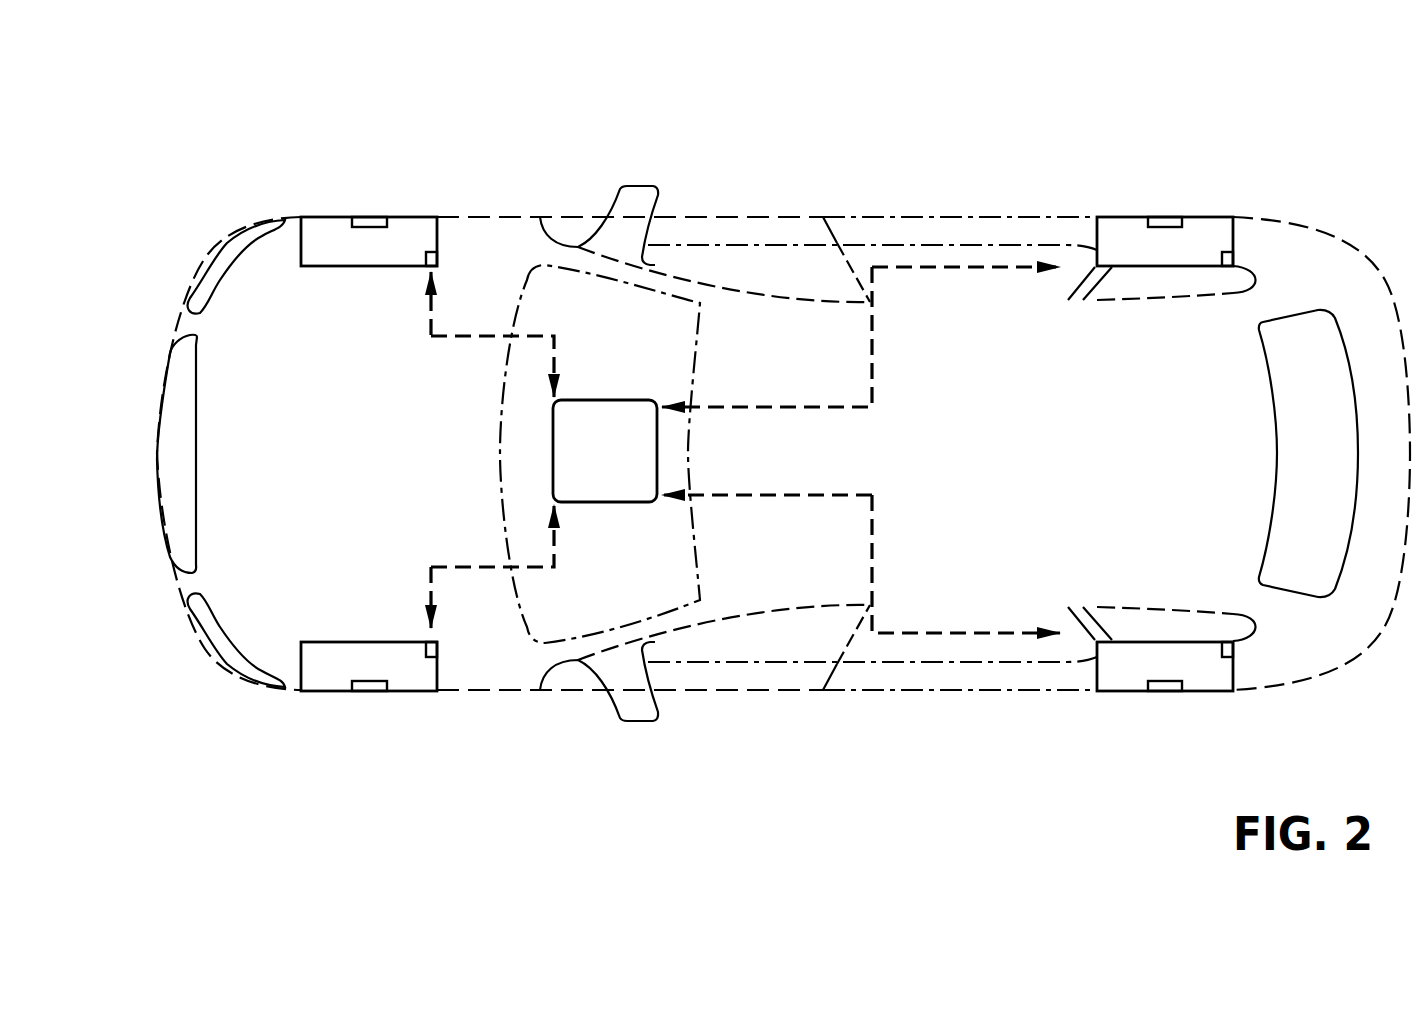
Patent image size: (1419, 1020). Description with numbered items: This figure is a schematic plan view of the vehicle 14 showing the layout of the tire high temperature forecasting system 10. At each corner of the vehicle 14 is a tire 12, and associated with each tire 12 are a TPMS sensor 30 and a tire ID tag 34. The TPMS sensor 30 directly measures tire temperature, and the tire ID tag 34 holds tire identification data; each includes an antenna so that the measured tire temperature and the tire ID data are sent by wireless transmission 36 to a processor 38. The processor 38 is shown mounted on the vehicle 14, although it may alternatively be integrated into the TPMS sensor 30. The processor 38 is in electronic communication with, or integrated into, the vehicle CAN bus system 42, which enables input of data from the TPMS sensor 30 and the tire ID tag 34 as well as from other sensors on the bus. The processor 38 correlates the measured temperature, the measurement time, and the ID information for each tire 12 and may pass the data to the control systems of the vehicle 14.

The tire high temperature forecasting system 10 is at (995, 78).
The tire 12 is at (413, 217).
The vehicle 14 is at (975, 218).
The TPMS sensor 30 is at (436, 257).
The tire ID tag 34 is at (377, 222).
The wireless transmission 36 is at (555, 345).
The processor 38 is at (551, 456).
The vehicle CAN bus system 42 is at (637, 598).